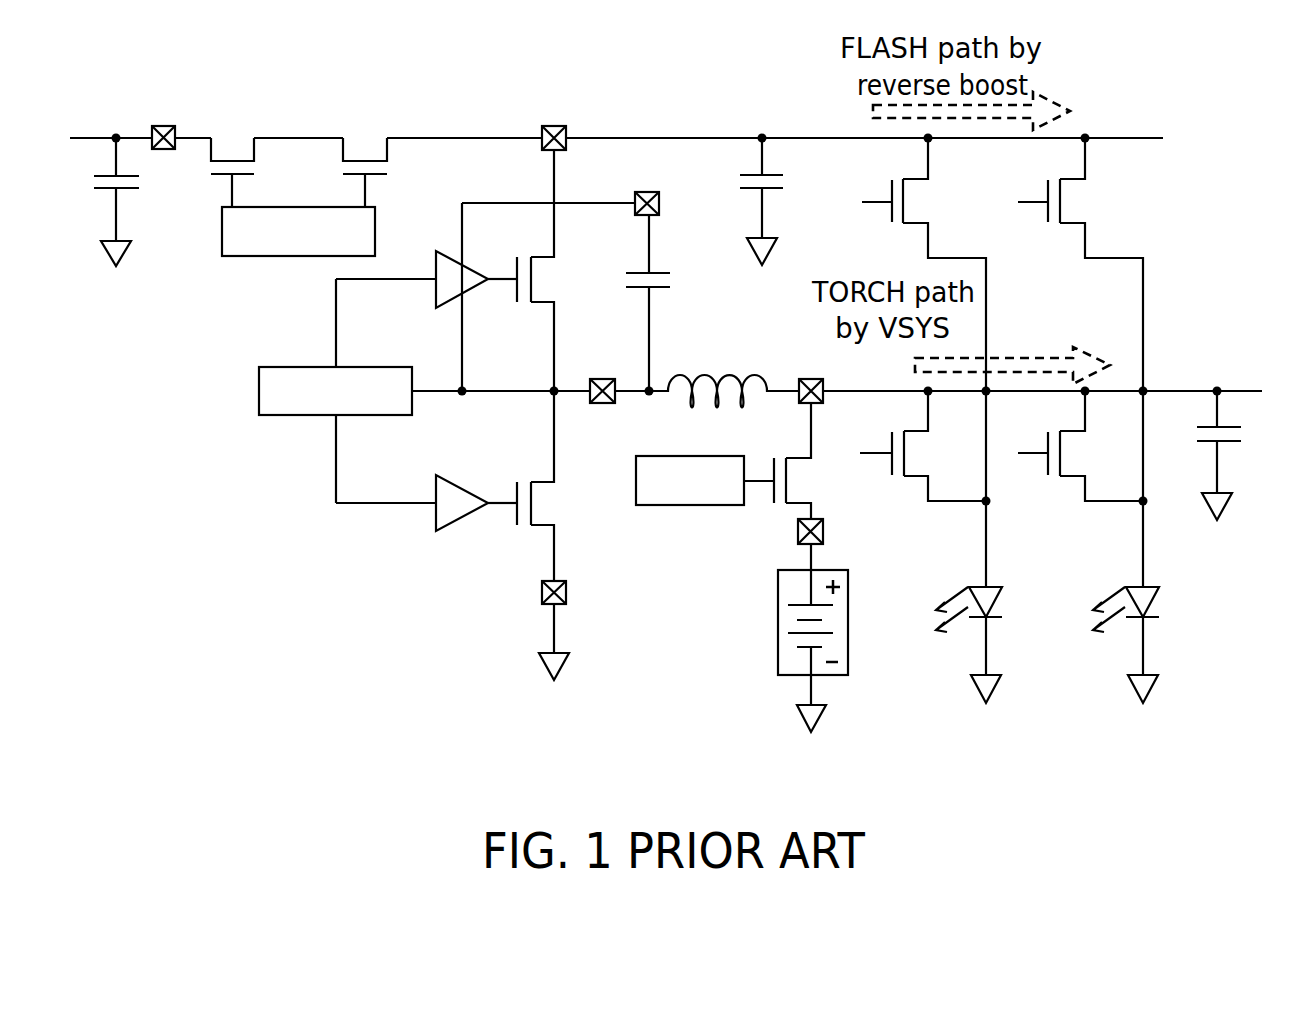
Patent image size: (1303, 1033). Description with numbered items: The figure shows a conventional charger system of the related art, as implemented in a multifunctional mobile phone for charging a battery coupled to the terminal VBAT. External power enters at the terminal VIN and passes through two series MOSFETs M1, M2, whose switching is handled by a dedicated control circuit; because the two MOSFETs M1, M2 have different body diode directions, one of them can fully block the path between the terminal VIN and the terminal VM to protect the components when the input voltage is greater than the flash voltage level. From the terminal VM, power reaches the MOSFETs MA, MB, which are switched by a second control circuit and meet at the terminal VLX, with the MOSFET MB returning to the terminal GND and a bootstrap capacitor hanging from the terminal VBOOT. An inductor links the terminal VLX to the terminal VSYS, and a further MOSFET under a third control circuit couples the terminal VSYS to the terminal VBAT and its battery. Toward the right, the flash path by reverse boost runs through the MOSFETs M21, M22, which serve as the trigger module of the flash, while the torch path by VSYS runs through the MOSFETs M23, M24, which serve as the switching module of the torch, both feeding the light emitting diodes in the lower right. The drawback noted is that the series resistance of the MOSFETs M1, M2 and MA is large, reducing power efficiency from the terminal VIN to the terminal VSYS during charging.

The terminal VIN is at (131, 126).
The MOSFET M1 is at (230, 155).
The MOSFET M2 is at (364, 155).
The terminal VM is at (552, 122).
The terminal VBOOT is at (646, 185).
The MOSFET MA is at (556, 279).
The MOSFET MB is at (556, 503).
The terminal VLX is at (603, 409).
The terminal VSYS is at (843, 409).
The terminal VBAT is at (766, 535).
The terminal GND is at (589, 590).
The MOSFET M21 is at (919, 201).
The MOSFET M22 is at (1076, 201).
The MOSFET M23 is at (919, 453).
The MOSFET M24 is at (1075, 453).